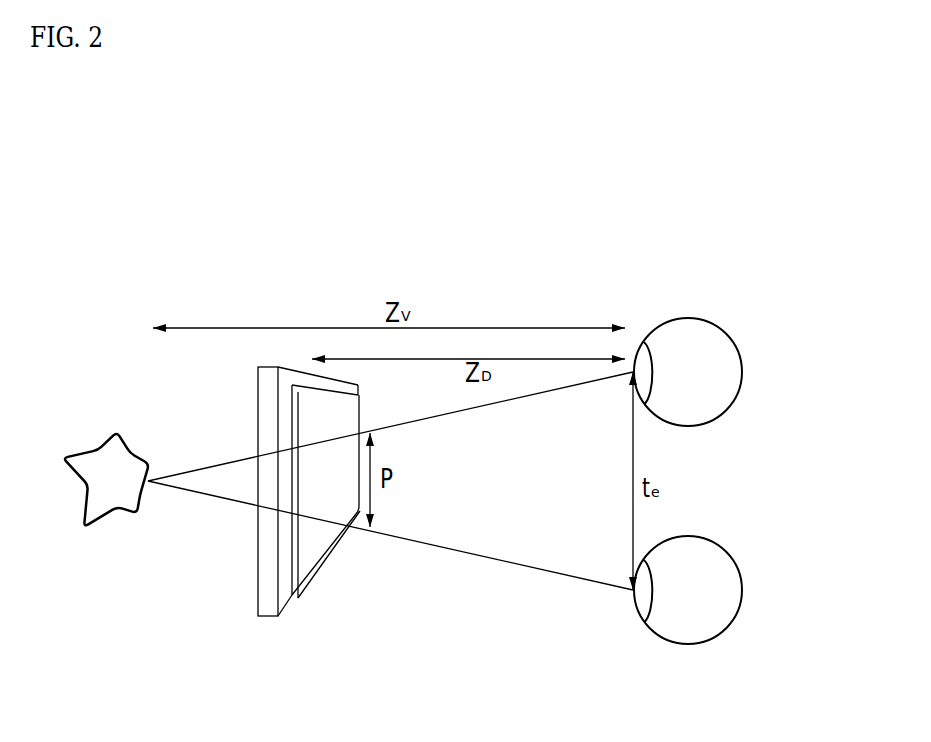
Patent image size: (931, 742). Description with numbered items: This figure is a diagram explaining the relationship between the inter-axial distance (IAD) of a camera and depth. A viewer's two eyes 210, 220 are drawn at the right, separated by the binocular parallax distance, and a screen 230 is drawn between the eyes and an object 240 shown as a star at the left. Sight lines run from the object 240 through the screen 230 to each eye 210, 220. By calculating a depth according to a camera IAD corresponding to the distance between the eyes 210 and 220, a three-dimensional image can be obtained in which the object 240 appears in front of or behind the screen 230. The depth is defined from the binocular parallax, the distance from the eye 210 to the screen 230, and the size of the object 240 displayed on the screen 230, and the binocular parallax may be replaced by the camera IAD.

The eye 210 is at (685, 327).
The eye 220 is at (687, 627).
The screen 230 is at (272, 610).
The object 240 is at (108, 447).